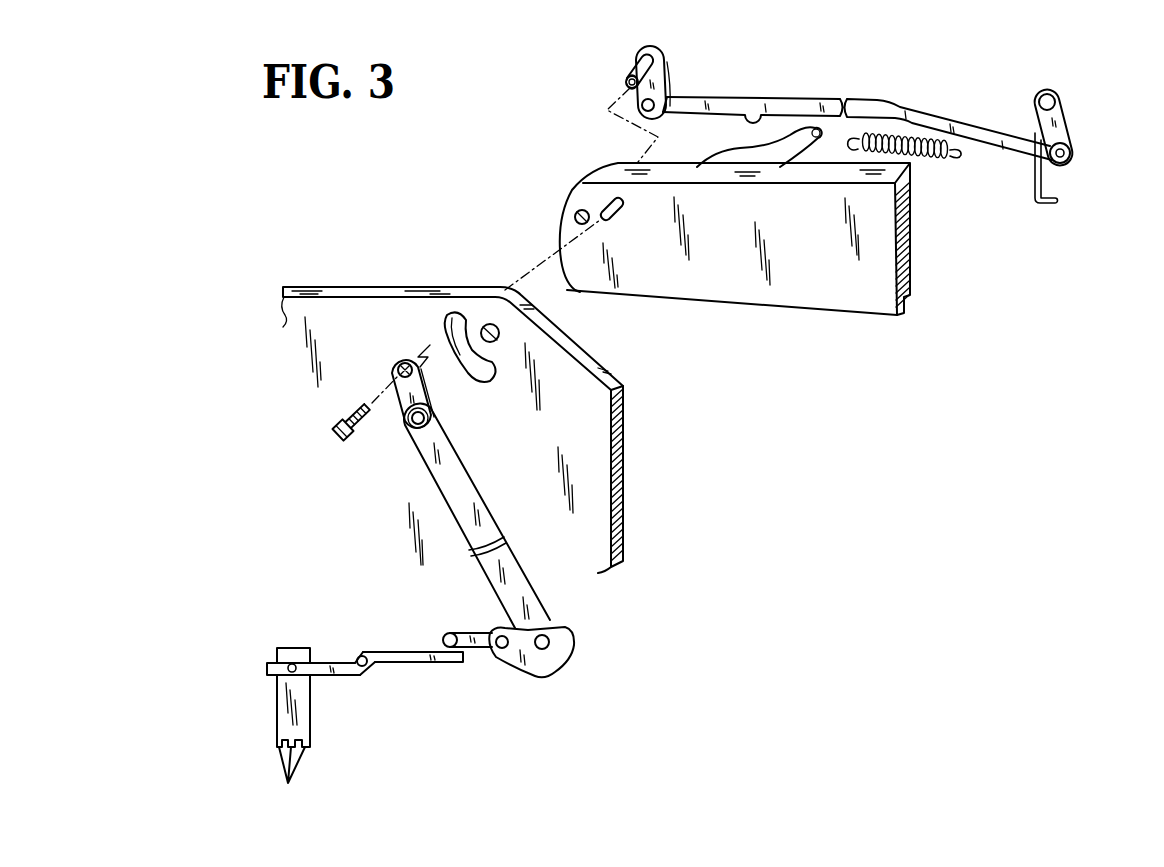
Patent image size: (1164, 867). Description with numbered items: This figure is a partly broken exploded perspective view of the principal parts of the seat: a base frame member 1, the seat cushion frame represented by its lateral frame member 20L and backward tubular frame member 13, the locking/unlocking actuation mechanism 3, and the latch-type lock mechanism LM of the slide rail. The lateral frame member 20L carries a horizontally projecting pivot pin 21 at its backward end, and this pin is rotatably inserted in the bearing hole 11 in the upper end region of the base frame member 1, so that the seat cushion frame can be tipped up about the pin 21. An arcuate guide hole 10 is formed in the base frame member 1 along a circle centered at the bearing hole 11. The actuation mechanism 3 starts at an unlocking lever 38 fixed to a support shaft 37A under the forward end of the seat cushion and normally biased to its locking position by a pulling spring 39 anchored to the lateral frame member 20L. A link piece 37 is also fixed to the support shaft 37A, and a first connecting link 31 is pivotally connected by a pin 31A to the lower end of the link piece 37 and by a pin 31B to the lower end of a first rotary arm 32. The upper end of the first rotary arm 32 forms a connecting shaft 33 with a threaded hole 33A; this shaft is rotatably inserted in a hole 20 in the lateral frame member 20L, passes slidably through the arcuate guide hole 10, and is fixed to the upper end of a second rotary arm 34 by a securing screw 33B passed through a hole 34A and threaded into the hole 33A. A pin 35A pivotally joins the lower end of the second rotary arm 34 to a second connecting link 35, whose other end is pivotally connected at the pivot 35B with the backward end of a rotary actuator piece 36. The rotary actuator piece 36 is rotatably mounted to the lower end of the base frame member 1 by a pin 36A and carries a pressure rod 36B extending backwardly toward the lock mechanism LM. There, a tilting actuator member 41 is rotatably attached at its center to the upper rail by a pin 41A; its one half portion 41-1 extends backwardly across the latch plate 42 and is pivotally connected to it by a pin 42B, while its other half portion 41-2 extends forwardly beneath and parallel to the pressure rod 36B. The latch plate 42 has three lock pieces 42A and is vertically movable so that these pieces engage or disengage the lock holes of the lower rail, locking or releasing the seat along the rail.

The base frame member 1 is at (367, 307).
The locking/unlocking actuation mechanism 3 is at (799, 533).
The arcuate guide hole 10 is at (452, 330).
The bearing hole 11 is at (480, 322).
The backward tubular frame member 13 is at (777, 150).
The hole 20 is at (577, 220).
The lateral frame member 20L is at (758, 293).
The pivot pin 21 is at (608, 203).
The first connecting link 31 is at (798, 100).
The pin 31A is at (1068, 143).
The pin 31B is at (657, 105).
The first rotary arm 32 is at (655, 88).
The connecting shaft 33 is at (637, 55).
The threaded hole 33A is at (626, 88).
The securing screw 33B is at (332, 440).
The second rotary arm 34 is at (420, 385).
The hole 34A is at (400, 367).
The second connecting link 35 is at (467, 487).
The pin 35A is at (410, 425).
The pivot 35B is at (550, 630).
The rotary actuator piece 36 is at (535, 674).
The pin 36A is at (500, 650).
The pressure rod 36B is at (470, 634).
The link piece 37 is at (1063, 123).
The support shaft 37A is at (1047, 96).
The unlocking lever 38 is at (1057, 205).
The pulling spring 39 is at (933, 163).
The tilting actuator member 41 is at (365, 679).
The half portion 41-1 is at (333, 677).
The half portion 41-2 is at (418, 663).
The pin 41A is at (365, 666).
The latch plate 42 is at (280, 708).
The lock pieces 42A is at (288, 785).
The pin 42B is at (292, 664).
The lock mechanism LM is at (258, 733).